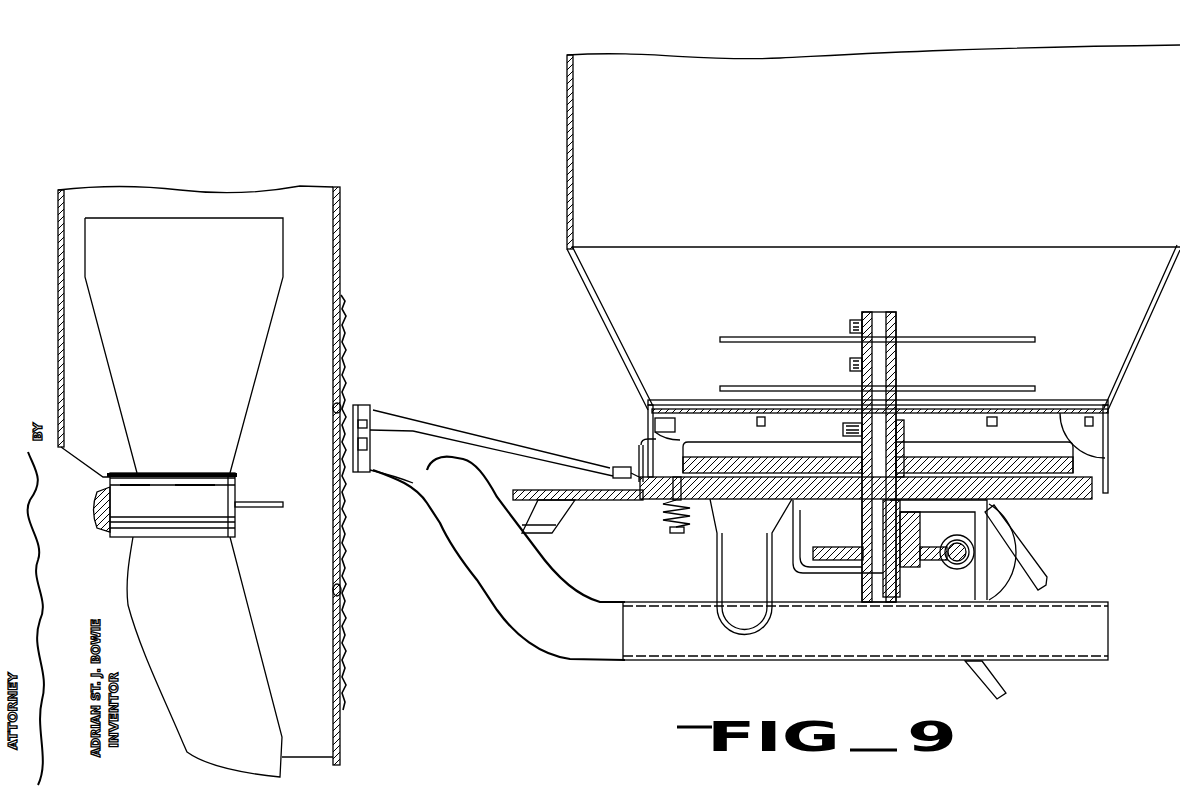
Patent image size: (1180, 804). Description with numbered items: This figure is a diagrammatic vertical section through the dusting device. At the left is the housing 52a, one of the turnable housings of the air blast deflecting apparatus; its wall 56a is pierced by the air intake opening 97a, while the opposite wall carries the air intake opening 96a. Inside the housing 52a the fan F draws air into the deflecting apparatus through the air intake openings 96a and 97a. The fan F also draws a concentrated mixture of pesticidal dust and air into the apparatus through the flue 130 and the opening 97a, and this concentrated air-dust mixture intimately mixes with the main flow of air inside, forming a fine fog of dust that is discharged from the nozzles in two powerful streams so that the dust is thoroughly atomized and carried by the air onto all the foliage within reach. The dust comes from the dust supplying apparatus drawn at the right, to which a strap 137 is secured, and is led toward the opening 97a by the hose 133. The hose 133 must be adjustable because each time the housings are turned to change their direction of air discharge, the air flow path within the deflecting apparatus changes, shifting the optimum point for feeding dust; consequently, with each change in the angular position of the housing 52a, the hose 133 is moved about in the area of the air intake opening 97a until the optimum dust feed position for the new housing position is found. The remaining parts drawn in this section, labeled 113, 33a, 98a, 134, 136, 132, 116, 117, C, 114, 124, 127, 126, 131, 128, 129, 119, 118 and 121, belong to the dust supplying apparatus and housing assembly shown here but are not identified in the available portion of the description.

The hopper 113 is at (718, 58).
The fan F is at (207, 246).
The side wall 56a is at (341, 228).
The air intake opening 96a is at (62, 310).
The hopper / feed member 33a is at (200, 292).
The wall lining 98a is at (342, 295).
The air intake opening 97a is at (341, 600).
The housing 52a is at (363, 654).
The bracket 134 is at (340, 403).
The arm 136 is at (372, 408).
The strap 137 is at (487, 442).
The hose 133 is at (530, 643).
The bracket 132 is at (553, 533).
The agitator bars 116 is at (1008, 344).
The shaft 117 is at (878, 310).
The chamber C is at (1045, 424).
The fitting 114 is at (650, 430).
The housing wall 124 is at (1108, 443).
The rotor disc 127 is at (688, 452).
The housing cavity 126 is at (1093, 470).
The base plate 131 is at (650, 500).
The spring 128 is at (730, 500).
The outlet tube 129 is at (712, 566).
The bearing housing 119 is at (932, 570).
The bearing 118 is at (963, 550).
The arm 121 is at (1034, 549).
The flue 130 is at (768, 662).